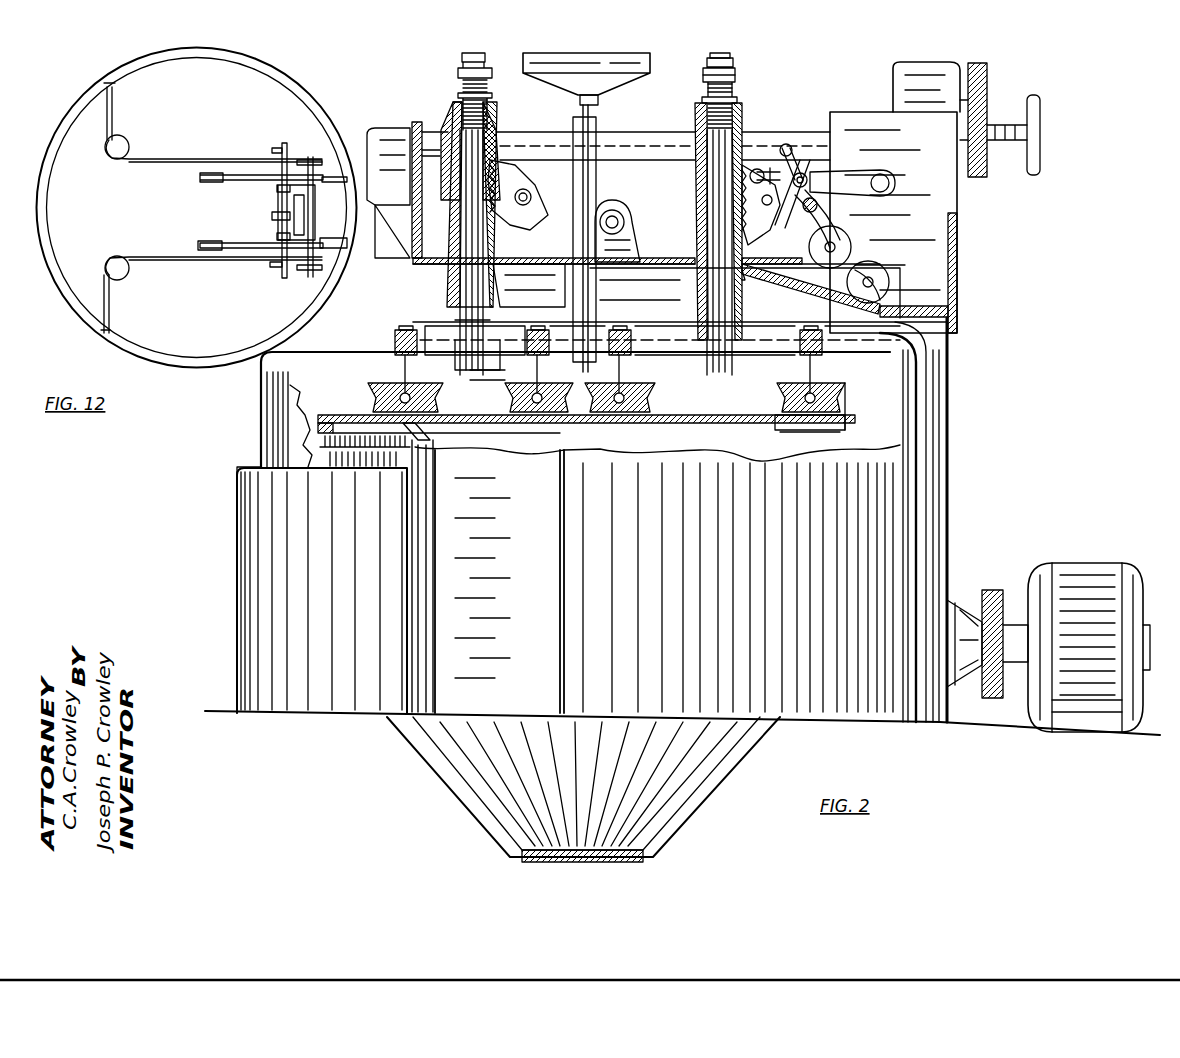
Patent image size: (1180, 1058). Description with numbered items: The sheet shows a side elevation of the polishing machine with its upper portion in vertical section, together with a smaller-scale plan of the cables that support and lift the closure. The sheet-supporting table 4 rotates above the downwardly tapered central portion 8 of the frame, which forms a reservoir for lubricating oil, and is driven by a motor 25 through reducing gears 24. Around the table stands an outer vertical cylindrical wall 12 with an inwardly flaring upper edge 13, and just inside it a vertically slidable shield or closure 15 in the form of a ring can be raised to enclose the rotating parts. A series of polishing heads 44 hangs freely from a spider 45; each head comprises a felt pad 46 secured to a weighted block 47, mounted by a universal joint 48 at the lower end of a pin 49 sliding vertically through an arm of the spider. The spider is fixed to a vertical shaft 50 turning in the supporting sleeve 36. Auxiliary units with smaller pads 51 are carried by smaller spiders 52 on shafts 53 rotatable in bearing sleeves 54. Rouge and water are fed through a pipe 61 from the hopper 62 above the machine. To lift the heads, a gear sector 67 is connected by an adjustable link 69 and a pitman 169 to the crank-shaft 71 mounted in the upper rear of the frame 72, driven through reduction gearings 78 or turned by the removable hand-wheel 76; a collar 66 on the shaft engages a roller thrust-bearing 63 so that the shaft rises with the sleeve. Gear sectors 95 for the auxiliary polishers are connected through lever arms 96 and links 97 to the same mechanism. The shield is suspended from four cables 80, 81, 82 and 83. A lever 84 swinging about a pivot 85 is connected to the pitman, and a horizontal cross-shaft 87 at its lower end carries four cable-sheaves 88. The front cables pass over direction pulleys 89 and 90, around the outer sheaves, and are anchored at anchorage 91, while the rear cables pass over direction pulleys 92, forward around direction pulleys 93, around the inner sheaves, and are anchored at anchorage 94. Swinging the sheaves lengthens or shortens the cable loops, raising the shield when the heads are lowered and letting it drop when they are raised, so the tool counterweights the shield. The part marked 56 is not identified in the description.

In FIG. 2, the sheet-supporting table 4 is at (318, 445).
In FIG. 2, the downwardly tapered central portion of the frame 8 is at (460, 752).
In FIG. 2, the outer vertical cylindrical wall 12 is at (258, 538).
In FIG. 2, the inwardly flaring upper edge 13 is at (276, 355).
In FIG. 2, the shield or closure 15 is at (272, 410).
In FIG. 12, the shield or closure 15 is at (288, 90).
In FIG. 2, the reducing gears 24 is at (990, 600).
In FIG. 2, the motor 25 is at (1083, 600).
In FIG. 2, the supporting sleeve 36 is at (700, 302).
In FIG. 2, the polishing heads 44 is at (655, 395).
In FIG. 2, the spider 45 is at (752, 365).
In FIG. 2, the felt pad 46 is at (848, 418).
In FIG. 2, the weighted block 47 is at (775, 400).
In FIG. 2, the universal joint 48 is at (812, 398).
In FIG. 2, the pin 49 is at (822, 362).
In FIG. 2, the vertical shaft 50 is at (738, 322).
In FIG. 2, the pads 51 is at (395, 400).
In FIG. 2, the smaller spiders 52 is at (520, 370).
In FIG. 2, the shafts 53 is at (470, 268).
In FIG. 2, the bearing sleeves 54 is at (470, 325).
In FIG. 2, the baffle 56 is at (340, 410).
In FIG. 2, the pipe 61 is at (588, 292).
In FIG. 2, the hopper or basin 62 is at (600, 78).
In FIG. 2, the roller thrust-bearing 63 is at (736, 75).
In FIG. 2, the collar 66 is at (734, 62).
In FIG. 2, the gear sector 67 is at (615, 212).
In FIG. 2, the adjustable link 69 is at (787, 150).
In FIG. 2, the crank-shaft 71 is at (905, 85).
In FIG. 2, the frame 72 is at (950, 258).
In FIG. 2, the removable hand-wheel 76 is at (1027, 140).
In FIG. 2, the reduction gearings 78 is at (988, 80).
In FIG. 12, the cable 80 is at (115, 125).
In FIG. 12, the cable 81 is at (108, 300).
In FIG. 12, the cable 82 is at (330, 172).
In FIG. 12, the cable 83 is at (332, 248).
In FIG. 2, the lever 84 is at (808, 180).
In FIG. 12, the lever 84 is at (296, 205).
In FIG. 2, the pivot 85 is at (818, 200).
In FIG. 12, the pivot 85 is at (277, 216).
In FIG. 12, the horizontal cross-shaft 87 is at (313, 200).
In FIG. 2, the cable-sheaves 88 is at (880, 270).
In FIG. 12, the cable-sheaves 88 is at (303, 158).
In FIG. 12, the direction pulley 89 is at (106, 110).
In FIG. 12, the direction pulley 90 is at (115, 150).
In FIG. 12, the anchorage 91 is at (272, 150).
In FIG. 12, the direction pulleys 92 is at (335, 180).
In FIG. 2, the direction pulleys 93 is at (802, 145).
In FIG. 12, the direction pulleys 93 is at (222, 181).
In FIG. 12, the anchorage 94 is at (272, 165).
In FIG. 2, the gear sectors 95 is at (512, 195).
In FIG. 2, the lever arms 96 is at (498, 160).
In FIG. 2, the links 97 is at (640, 145).
In FIG. 2, the pitman 169 is at (855, 185).